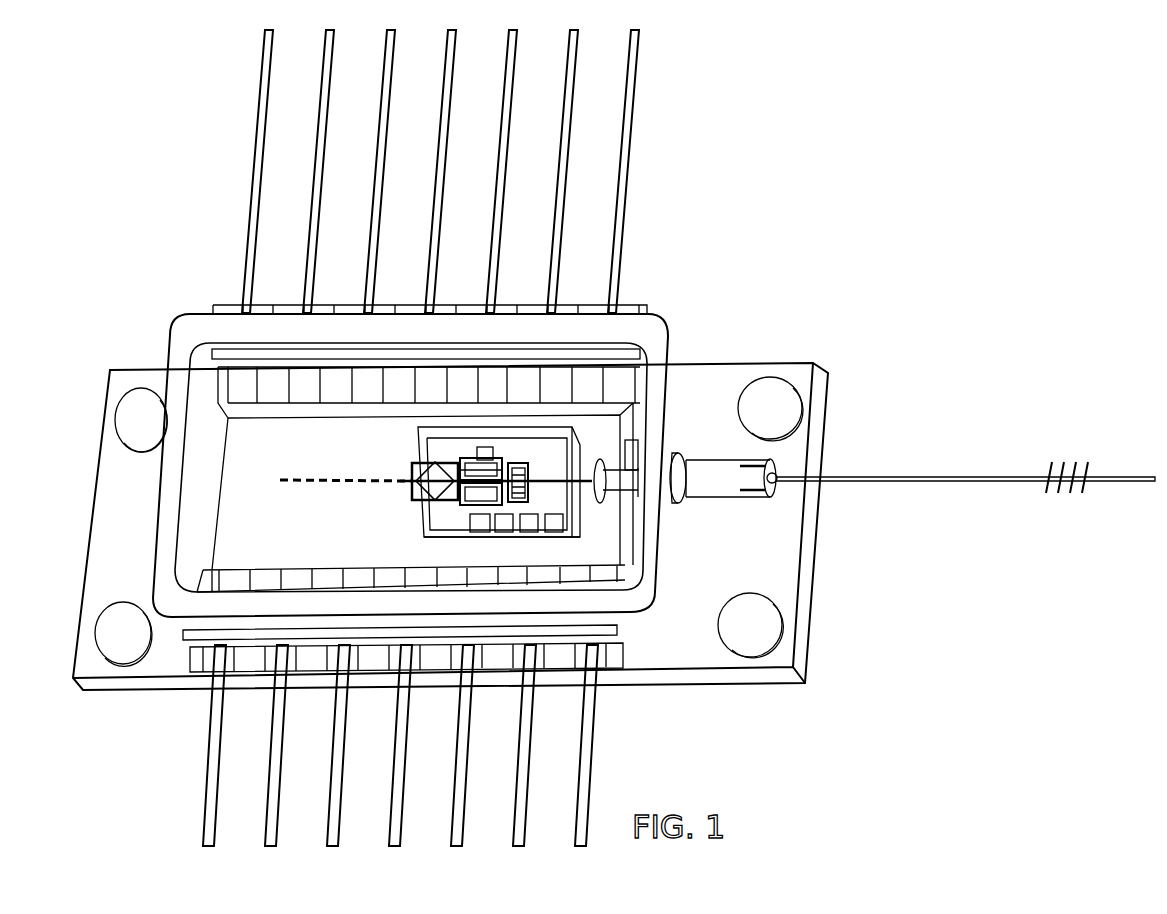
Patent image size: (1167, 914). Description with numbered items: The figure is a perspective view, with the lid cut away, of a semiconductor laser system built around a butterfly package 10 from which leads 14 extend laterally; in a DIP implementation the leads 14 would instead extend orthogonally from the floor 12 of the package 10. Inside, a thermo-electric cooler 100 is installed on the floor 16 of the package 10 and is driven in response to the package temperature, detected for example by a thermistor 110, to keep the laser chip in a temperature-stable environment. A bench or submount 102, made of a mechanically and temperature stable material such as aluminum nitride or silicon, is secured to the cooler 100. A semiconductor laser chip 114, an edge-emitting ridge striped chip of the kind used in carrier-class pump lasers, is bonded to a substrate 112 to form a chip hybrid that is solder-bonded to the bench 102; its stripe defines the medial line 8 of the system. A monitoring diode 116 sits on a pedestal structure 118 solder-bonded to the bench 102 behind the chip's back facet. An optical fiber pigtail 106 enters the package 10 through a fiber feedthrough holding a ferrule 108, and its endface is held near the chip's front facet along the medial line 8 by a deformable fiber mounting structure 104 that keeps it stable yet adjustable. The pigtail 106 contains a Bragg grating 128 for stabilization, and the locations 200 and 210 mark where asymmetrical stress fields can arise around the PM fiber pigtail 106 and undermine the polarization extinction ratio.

The medial line 8 is at (380, 483).
The package 10 is at (190, 340).
The floor 12 is at (230, 570).
The leads 14 is at (207, 811).
The floor 16 is at (258, 492).
The thermo-electric cooler 100 is at (578, 427).
The bench 102 is at (577, 545).
The deformable fiber mounting structure 104 is at (518, 487).
The optical fiber pigtail 106 is at (560, 465).
The ferrule 108 is at (703, 470).
The thermistor 110 is at (484, 447).
The substrate 112 is at (468, 498).
The semiconductor laser chip 114 is at (470, 470).
The monitoring diode 116 is at (428, 462).
The pedestal structure 118 is at (458, 492).
The Bragg grating 128 is at (1050, 462).
The stress field location 200 is at (775, 474).
The stress field location 210 is at (530, 482).